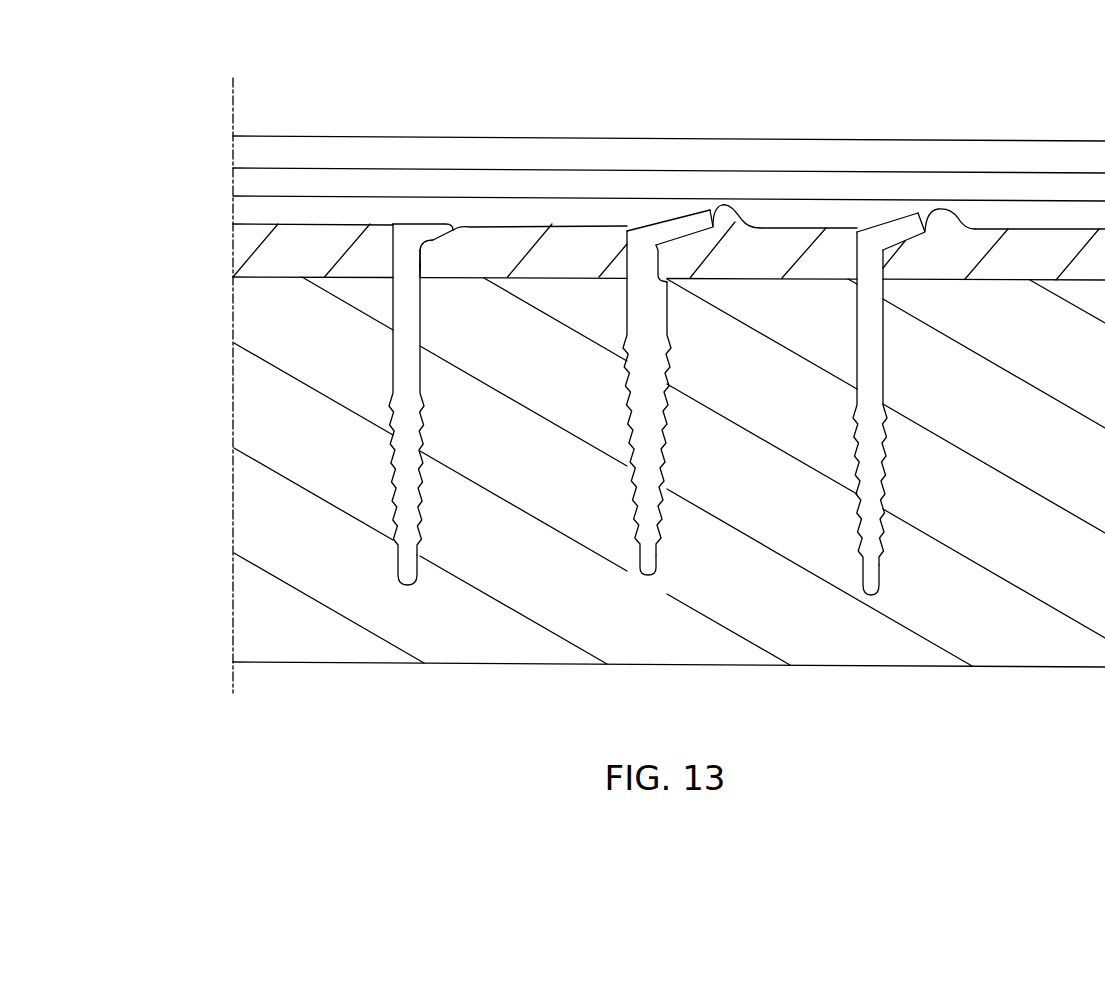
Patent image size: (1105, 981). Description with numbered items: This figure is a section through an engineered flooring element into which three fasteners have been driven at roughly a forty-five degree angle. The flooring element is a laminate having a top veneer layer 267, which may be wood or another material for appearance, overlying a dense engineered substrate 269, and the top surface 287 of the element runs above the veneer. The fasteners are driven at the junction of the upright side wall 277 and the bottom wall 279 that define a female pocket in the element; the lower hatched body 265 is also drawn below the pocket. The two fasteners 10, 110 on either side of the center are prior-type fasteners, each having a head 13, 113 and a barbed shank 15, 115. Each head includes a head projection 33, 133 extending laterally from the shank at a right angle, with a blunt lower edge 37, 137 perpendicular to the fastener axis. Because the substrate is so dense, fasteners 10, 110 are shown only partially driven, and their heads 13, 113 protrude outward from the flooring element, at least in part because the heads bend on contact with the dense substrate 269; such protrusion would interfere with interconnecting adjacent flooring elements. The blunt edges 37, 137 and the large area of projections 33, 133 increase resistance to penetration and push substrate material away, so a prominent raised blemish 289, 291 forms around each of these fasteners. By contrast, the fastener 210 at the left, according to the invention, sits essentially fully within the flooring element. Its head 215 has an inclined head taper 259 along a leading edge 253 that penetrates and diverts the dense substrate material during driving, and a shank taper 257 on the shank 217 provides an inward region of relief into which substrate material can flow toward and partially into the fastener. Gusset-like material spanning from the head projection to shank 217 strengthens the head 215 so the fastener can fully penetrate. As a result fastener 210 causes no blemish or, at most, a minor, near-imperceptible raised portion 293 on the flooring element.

The fastener 10 is at (614, 320).
The head 13 is at (659, 173).
The shank 15 is at (643, 395).
The head projection 33 is at (673, 227).
The lower edge 37 is at (687, 233).
The fastener 110 is at (849, 325).
The head 113 is at (882, 152).
The shank 115 is at (870, 375).
The head projection 133 is at (891, 235).
The lower edge 137 is at (912, 237).
The fastener 210 is at (398, 306).
The head 215 is at (458, 189).
The shank 217 is at (407, 357).
The leading edge 253 is at (447, 228).
The shank taper 257 is at (428, 243).
The head taper 259 is at (421, 266).
The substrate 265 is at (508, 485).
The top veneer layer 267 is at (312, 136).
The dense engineered substrate 269 is at (272, 253).
The side wall 277 is at (260, 180).
The bottom wall 279 is at (315, 223).
The top surface 287 is at (535, 137).
The raised blemish 289 is at (725, 215).
The raised blemish 291 is at (940, 220).
The raised portion 293 is at (422, 265).